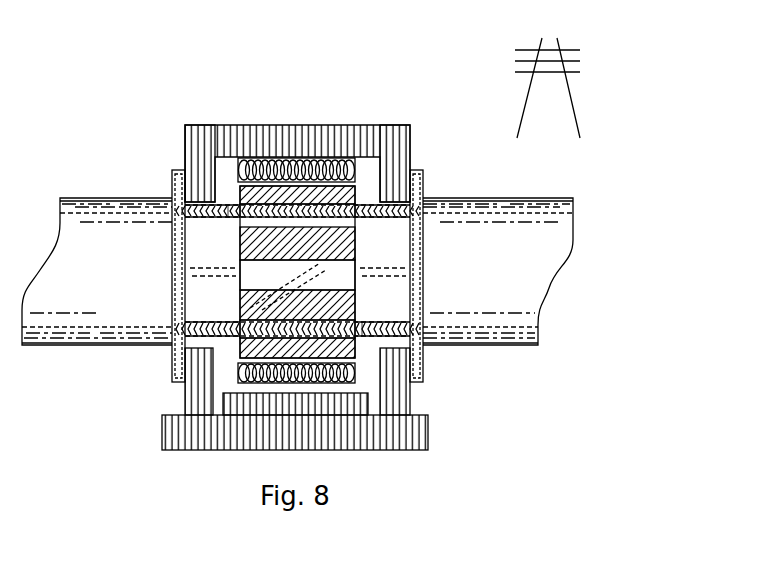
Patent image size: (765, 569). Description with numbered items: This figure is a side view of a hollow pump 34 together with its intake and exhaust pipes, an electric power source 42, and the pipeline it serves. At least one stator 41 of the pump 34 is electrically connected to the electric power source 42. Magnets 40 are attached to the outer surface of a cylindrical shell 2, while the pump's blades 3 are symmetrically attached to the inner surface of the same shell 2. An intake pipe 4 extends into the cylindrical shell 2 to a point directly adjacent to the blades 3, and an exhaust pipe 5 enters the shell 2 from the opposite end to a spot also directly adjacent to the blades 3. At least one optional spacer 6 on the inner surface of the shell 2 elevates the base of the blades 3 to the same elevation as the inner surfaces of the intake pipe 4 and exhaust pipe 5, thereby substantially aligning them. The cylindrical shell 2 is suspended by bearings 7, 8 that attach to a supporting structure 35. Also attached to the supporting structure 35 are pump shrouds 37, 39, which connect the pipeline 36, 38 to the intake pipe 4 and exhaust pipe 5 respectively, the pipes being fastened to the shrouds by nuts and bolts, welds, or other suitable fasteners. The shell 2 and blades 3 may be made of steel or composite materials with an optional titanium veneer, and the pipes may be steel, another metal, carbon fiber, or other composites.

The cylindrical shell 2 is at (383, 211).
The pump blades 3 is at (320, 262).
The intake pipe 4 is at (198, 219).
The exhaust pipe 5 is at (379, 217).
The spacer 6 is at (237, 219).
The bearing 7 is at (187, 184).
The bearing 8 is at (408, 182).
The pump 34 is at (160, 106).
The supporting structure 35 is at (411, 138).
The pipeline 36 is at (124, 286).
The pump shroud 37 is at (172, 362).
The pipeline 38 is at (494, 286).
The pump shroud 39 is at (423, 362).
The magnets 40 is at (310, 254).
The stator 41 is at (243, 208).
The electric power source 42 is at (523, 110).